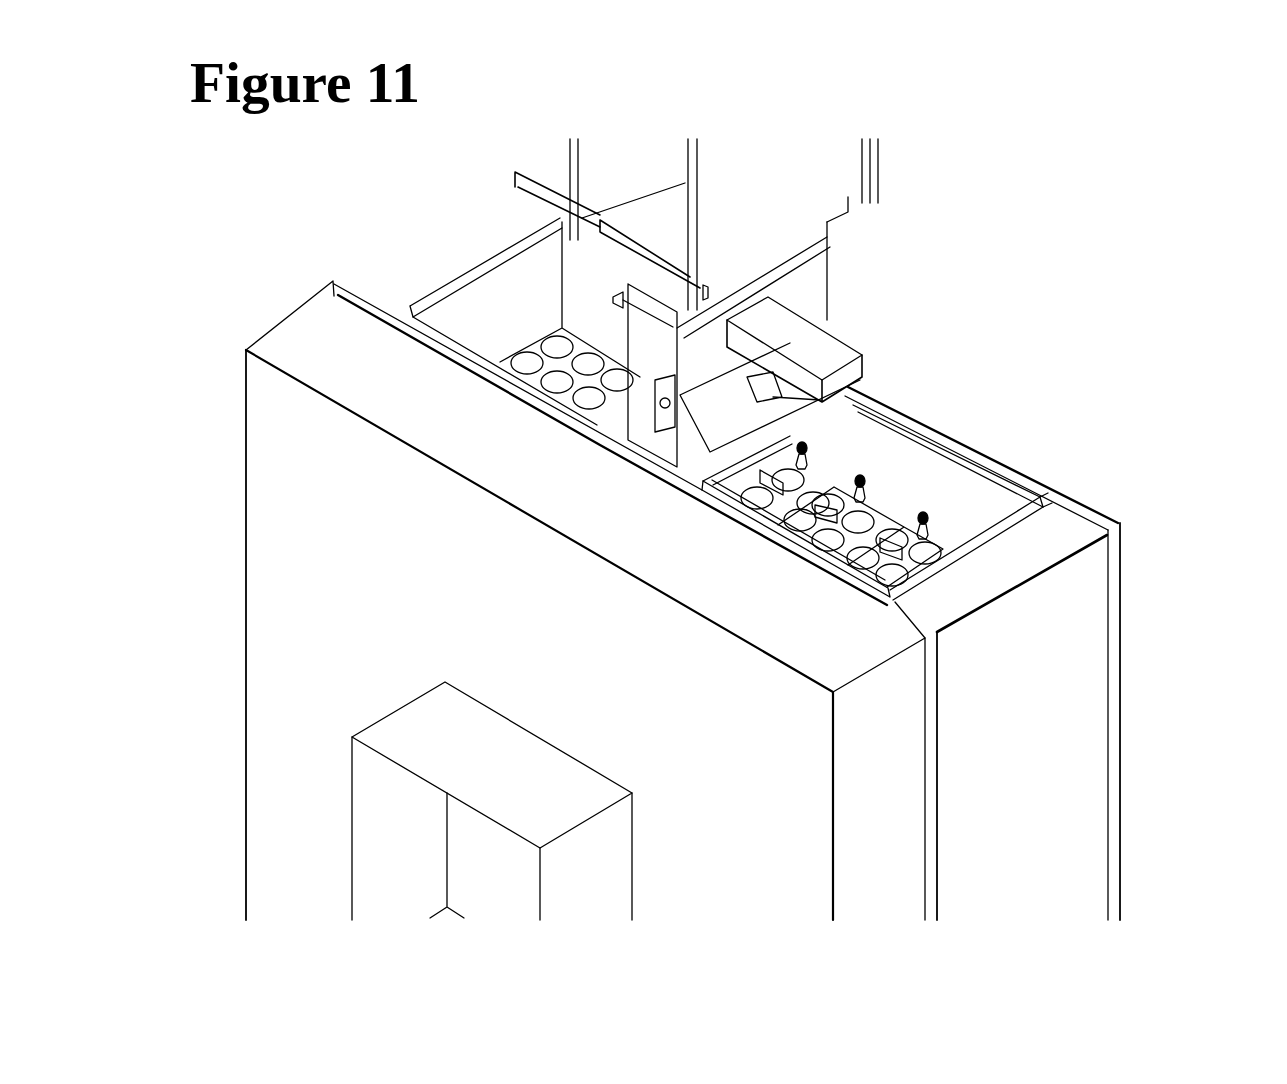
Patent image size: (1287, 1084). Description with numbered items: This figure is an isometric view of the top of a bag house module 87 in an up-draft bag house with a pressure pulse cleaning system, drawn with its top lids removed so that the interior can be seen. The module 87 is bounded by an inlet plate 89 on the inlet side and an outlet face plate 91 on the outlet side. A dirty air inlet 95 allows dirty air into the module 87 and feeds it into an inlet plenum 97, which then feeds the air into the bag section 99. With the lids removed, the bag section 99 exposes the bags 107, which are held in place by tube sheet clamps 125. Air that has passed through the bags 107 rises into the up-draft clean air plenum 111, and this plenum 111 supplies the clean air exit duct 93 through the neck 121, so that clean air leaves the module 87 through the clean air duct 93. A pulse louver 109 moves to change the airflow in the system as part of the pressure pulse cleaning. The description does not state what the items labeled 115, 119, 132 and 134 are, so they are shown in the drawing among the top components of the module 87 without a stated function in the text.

The module 87 is at (1133, 198).
The inlet plate 89 is at (268, 594).
The outlet face plate 91 is at (1125, 670).
The clean air exit duct 93 is at (850, 175).
The dirty air inlet 95 is at (380, 826).
The inlet plenum 97 is at (298, 324).
The bag section 99 is at (1085, 742).
The bags 107 is at (870, 515).
The pulse louver 109 is at (918, 310).
The clean air plenum 111 is at (983, 503).
The well 115 is at (850, 430).
The dispenser block 119 is at (837, 343).
The neck 121 is at (827, 257).
The tube sheet clamps 125 is at (935, 527).
The sensor plate 132 is at (770, 390).
The bracket 134 is at (662, 432).